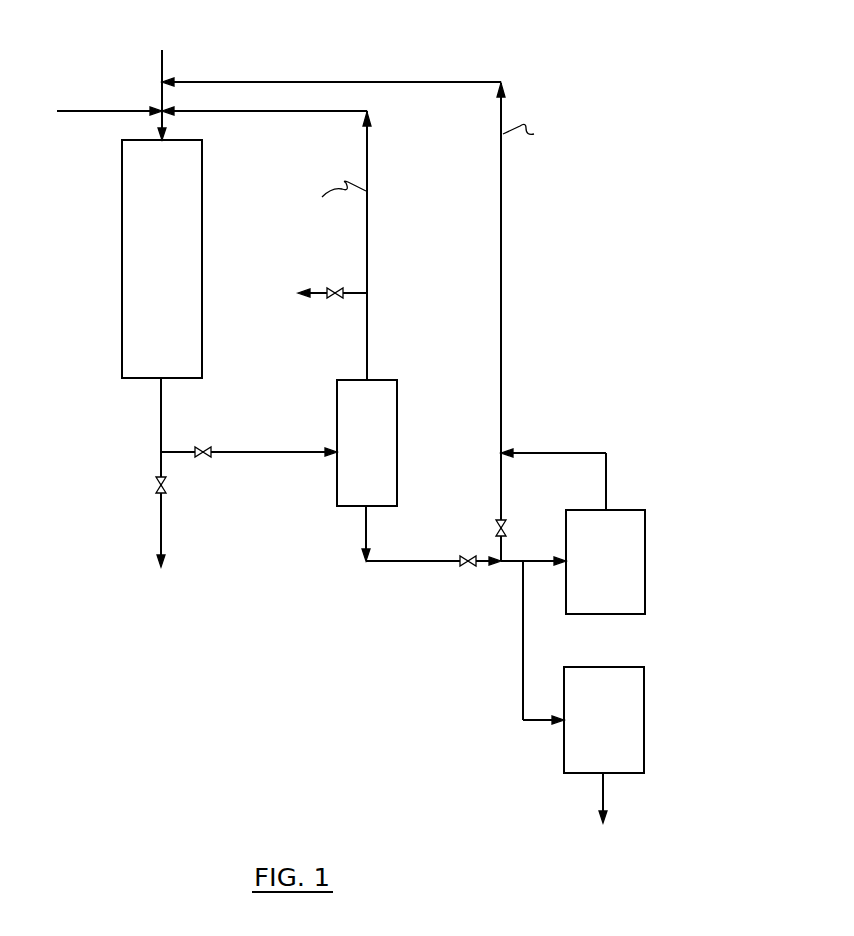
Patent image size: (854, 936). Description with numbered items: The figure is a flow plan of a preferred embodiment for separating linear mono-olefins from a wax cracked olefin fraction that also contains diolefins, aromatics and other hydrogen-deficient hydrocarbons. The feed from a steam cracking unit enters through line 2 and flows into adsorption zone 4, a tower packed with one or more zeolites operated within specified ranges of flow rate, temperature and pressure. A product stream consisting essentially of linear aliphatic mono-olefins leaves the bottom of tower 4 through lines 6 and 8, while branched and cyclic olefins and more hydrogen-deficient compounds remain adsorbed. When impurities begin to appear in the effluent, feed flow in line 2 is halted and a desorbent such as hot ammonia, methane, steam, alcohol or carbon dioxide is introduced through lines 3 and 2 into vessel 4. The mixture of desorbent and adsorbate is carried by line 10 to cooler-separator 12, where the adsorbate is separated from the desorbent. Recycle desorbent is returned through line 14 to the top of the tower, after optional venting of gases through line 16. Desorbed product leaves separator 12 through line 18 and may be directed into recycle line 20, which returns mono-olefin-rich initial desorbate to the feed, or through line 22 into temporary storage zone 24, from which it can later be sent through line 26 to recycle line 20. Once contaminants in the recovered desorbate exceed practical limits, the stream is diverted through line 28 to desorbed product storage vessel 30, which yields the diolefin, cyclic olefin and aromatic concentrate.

The feed line 2 is at (160, 70).
The desorbent line 3 is at (84, 114).
The adsorption zone 4 is at (154, 232).
The product withdrawal line 6 is at (161, 412).
The product line 8 is at (161, 522).
The line to desorbent separation zone 10 is at (280, 447).
The cooler-separator 12 is at (355, 423).
The recycle desorbent line 14 is at (367, 224).
The vent line 16 is at (316, 299).
The desorbed product line 18 is at (366, 531).
The recycle line 20 is at (501, 224).
The line to temporary storage 22 is at (543, 558).
The temporary storage zone 24 is at (593, 548).
The line to recycle 26 is at (566, 453).
The diversion line 28 is at (523, 641).
The desorbed product storage vessel 30 is at (593, 710).